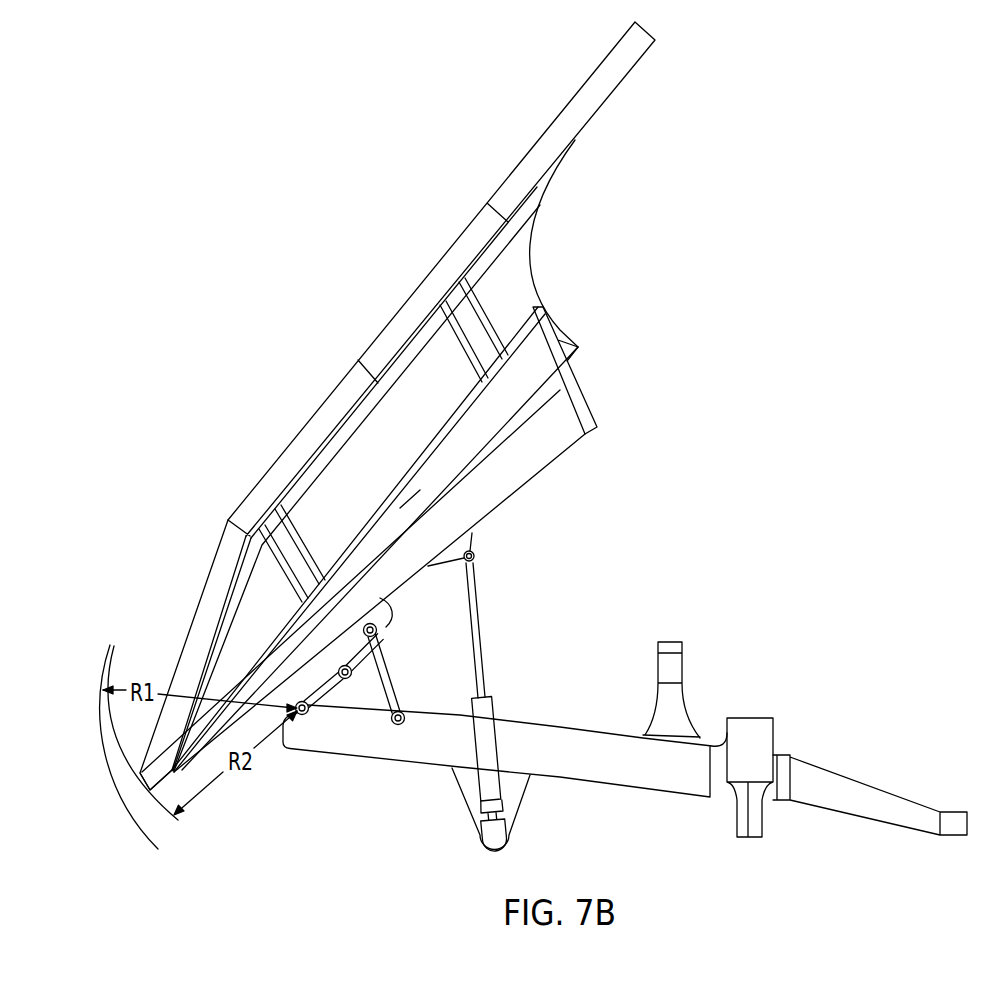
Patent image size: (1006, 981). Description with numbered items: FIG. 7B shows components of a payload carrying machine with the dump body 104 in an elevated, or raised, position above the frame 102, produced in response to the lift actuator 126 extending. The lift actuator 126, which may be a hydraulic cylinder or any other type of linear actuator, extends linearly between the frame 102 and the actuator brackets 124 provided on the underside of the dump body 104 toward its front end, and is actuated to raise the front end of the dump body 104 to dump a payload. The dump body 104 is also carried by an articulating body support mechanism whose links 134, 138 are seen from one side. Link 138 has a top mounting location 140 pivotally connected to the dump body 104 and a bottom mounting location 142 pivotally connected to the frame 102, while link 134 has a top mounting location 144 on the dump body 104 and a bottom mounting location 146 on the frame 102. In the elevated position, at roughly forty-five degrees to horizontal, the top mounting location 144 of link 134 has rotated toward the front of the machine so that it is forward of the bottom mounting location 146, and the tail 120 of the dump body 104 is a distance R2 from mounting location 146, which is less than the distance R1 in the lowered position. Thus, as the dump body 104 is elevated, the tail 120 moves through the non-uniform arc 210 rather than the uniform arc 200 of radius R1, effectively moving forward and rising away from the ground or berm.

The frame 102 is at (870, 795).
The dump body 104 is at (549, 401).
The tail 120 is at (140, 774).
The actuator brackets 124 is at (474, 552).
The lift actuator 126 is at (503, 752).
The link 134 is at (328, 705).
The link 138 is at (389, 676).
The top mounting location 140 is at (391, 615).
The bottom mounting location 142 is at (402, 710).
The top mounting location 144 is at (356, 688).
The bottom mounting location 146 is at (311, 717).
The uniform arc 200 is at (99, 718).
The non-uniform arc 210 is at (140, 815).